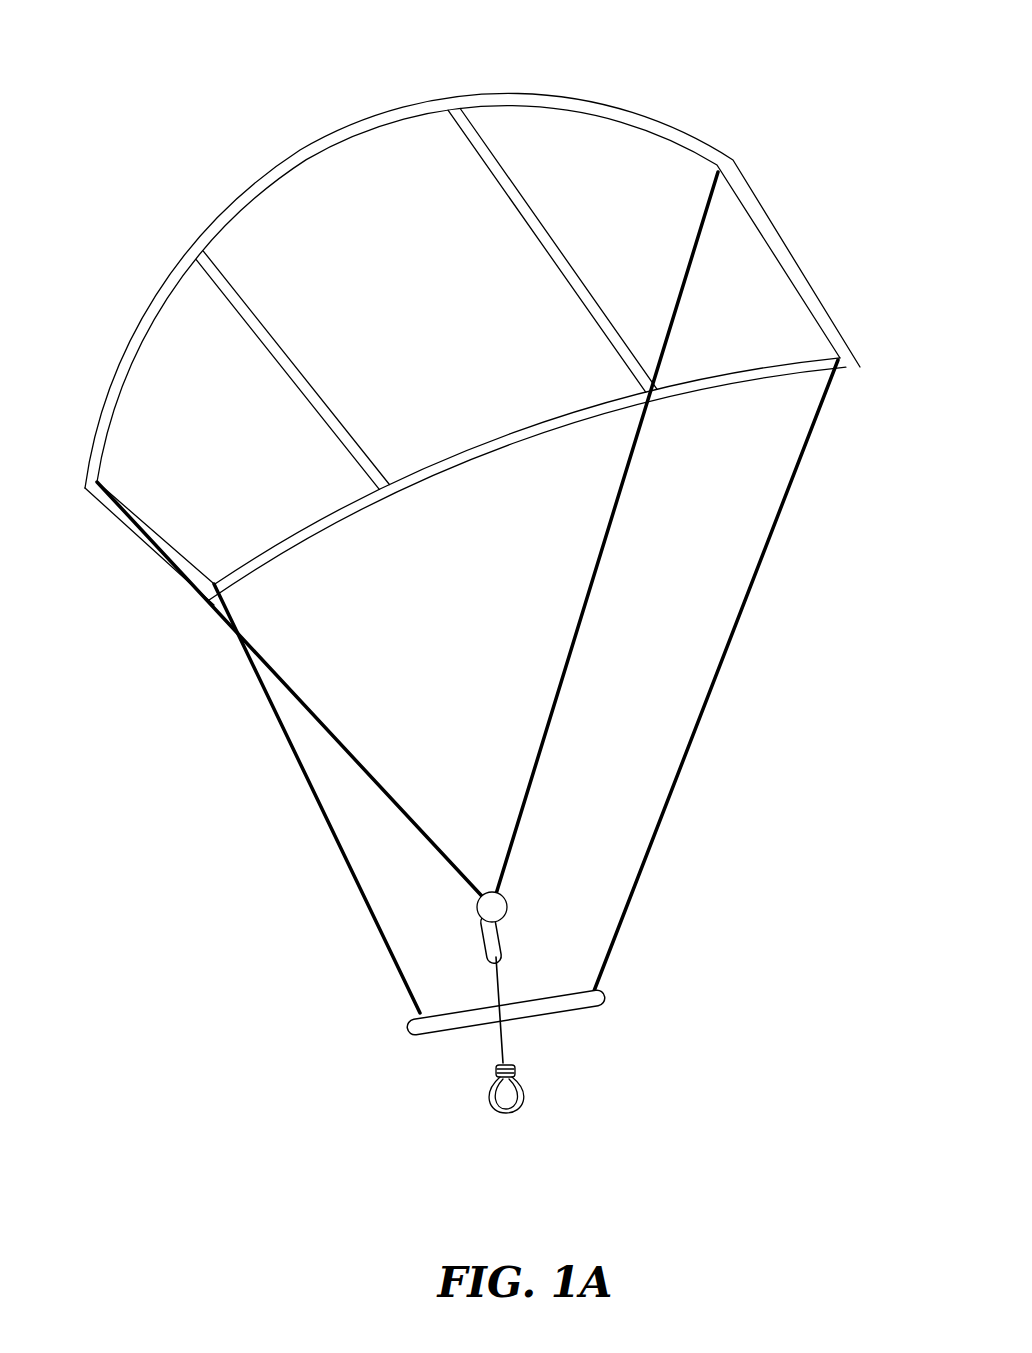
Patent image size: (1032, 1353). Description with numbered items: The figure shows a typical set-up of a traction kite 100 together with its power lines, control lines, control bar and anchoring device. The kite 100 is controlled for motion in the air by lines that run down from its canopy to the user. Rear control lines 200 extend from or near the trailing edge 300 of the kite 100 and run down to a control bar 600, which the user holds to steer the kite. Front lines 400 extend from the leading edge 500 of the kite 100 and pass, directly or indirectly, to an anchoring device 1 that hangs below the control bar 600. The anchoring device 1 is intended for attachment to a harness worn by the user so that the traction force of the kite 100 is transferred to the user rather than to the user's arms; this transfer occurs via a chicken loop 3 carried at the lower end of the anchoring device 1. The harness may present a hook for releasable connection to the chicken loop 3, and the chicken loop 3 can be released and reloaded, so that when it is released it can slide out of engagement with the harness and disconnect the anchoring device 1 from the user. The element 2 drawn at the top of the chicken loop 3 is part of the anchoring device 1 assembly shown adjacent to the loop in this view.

The anchoring device 1 is at (449, 1127).
The handle clip 2 is at (517, 1075).
The chicken loop 3 is at (527, 1104).
The kite 100 is at (723, 69).
The rear control lines 200 is at (363, 899).
The trailing edge 300 is at (480, 456).
The front lines 400 is at (423, 825).
The leading edge 500 is at (462, 101).
The control bar 600 is at (437, 1029).